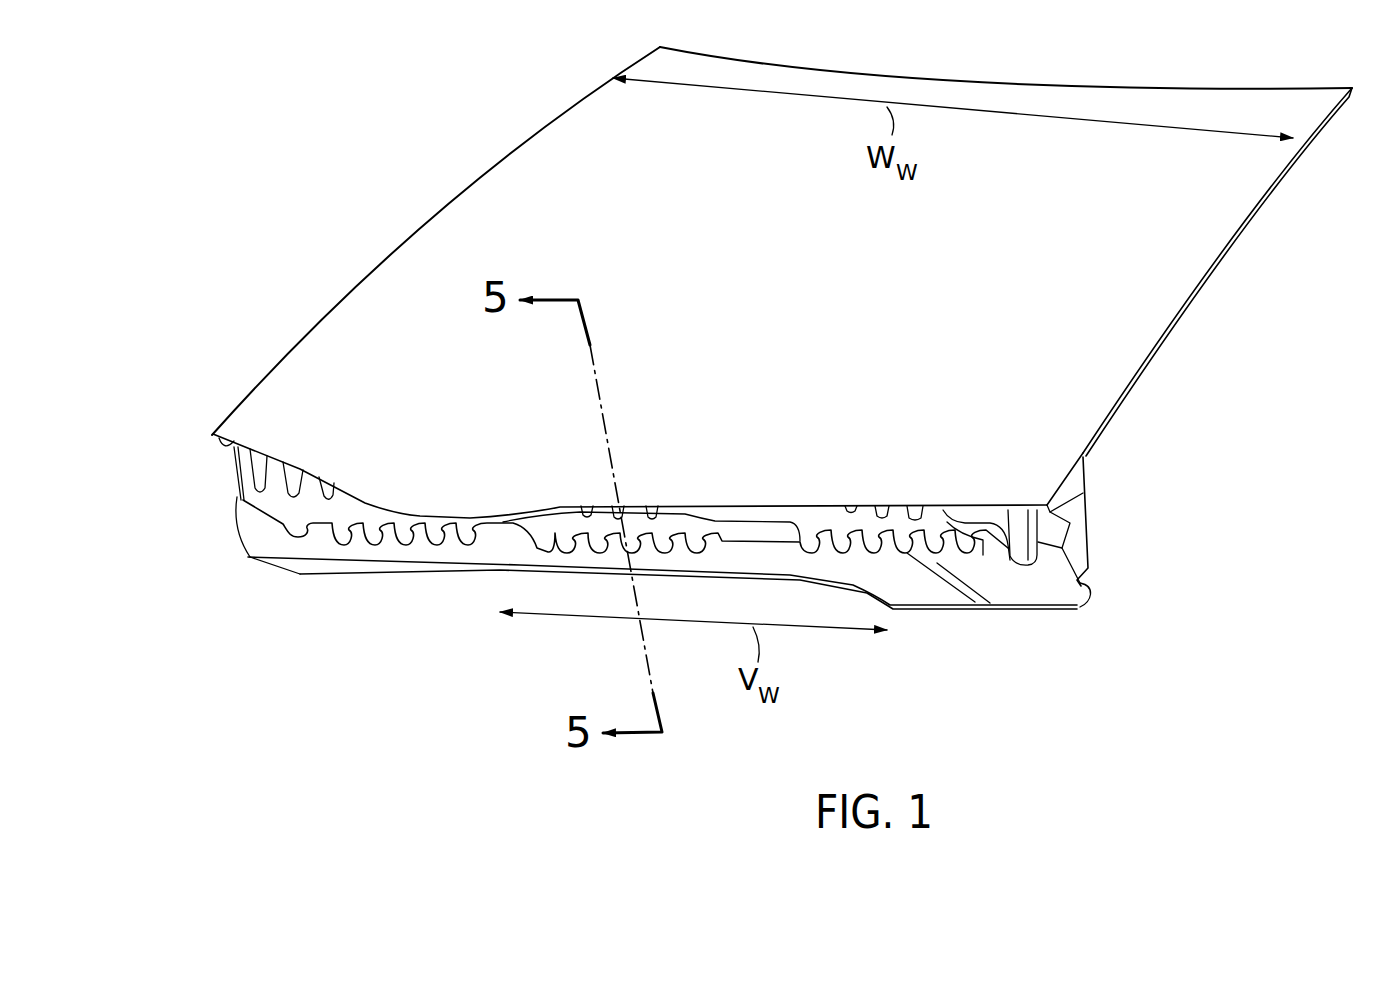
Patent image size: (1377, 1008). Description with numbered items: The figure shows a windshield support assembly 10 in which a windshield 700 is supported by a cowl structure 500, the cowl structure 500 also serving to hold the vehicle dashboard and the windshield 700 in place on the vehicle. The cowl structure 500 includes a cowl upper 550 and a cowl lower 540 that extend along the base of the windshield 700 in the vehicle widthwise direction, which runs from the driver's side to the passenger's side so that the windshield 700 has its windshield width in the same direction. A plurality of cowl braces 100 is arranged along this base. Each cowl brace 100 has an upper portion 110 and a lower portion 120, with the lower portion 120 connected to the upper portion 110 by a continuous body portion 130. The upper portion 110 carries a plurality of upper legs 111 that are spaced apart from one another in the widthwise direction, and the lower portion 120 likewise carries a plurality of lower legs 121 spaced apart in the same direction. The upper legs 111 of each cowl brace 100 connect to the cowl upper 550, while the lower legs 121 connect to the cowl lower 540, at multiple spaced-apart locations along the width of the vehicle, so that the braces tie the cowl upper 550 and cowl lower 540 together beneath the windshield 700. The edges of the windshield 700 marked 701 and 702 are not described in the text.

The windshield support assembly 10 is at (303, 240).
The cowl brace 100 is at (640, 499).
The upper portion 110 is at (230, 467).
The upper legs 111 is at (289, 462).
The lower portion 120 is at (278, 525).
The lower legs 121 is at (340, 522).
The continuous body portion 130 is at (240, 500).
The cowl structure 500 is at (730, 499).
The cowl lower 540 is at (1083, 590).
The cowl upper 550 is at (1088, 523).
The windshield 700 is at (782, 276).
The blade leading edge 701 is at (473, 177).
The blade trailing edge 702 is at (1177, 317).